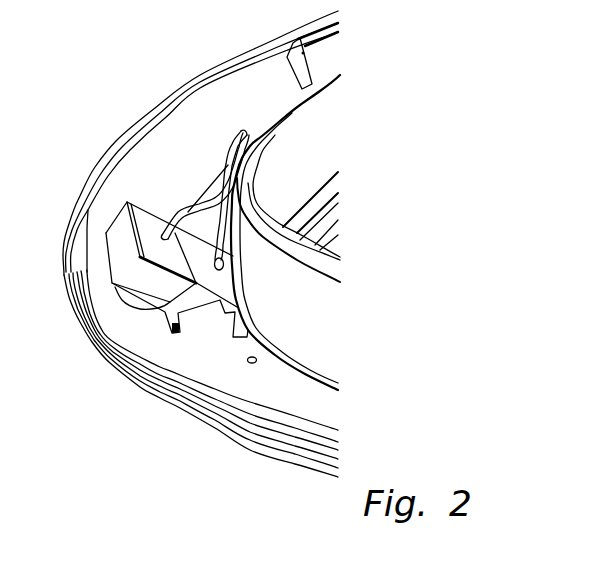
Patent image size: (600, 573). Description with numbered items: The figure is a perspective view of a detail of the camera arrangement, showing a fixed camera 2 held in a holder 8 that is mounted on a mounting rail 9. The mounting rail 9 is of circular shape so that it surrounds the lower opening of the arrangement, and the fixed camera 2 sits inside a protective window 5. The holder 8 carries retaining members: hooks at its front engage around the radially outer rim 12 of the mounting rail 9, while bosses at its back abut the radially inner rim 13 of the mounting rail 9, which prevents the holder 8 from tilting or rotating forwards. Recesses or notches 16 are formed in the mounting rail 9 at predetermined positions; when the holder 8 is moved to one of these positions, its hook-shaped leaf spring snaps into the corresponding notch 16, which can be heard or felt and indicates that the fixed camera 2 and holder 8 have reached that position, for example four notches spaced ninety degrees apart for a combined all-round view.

The fixed camera 2 is at (110, 333).
The protective window 5 is at (168, 365).
The holder 8 is at (118, 217).
The mounting rail 9 is at (272, 393).
The radially outer rim 12 is at (210, 372).
The radially inner rim 13 is at (295, 370).
The notch 16 is at (247, 327).